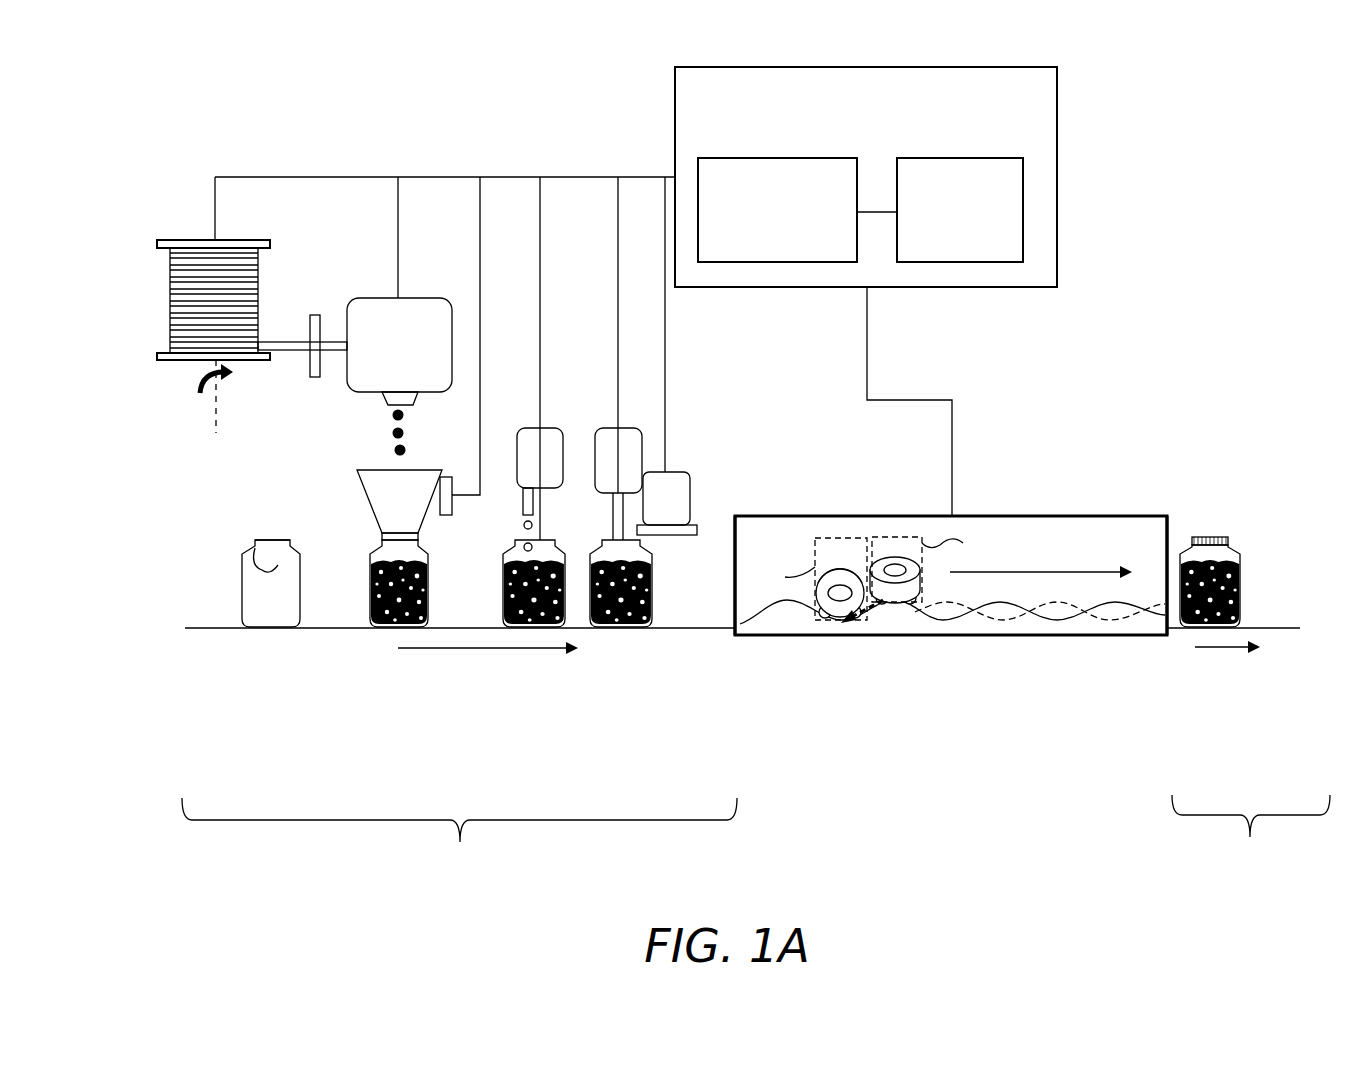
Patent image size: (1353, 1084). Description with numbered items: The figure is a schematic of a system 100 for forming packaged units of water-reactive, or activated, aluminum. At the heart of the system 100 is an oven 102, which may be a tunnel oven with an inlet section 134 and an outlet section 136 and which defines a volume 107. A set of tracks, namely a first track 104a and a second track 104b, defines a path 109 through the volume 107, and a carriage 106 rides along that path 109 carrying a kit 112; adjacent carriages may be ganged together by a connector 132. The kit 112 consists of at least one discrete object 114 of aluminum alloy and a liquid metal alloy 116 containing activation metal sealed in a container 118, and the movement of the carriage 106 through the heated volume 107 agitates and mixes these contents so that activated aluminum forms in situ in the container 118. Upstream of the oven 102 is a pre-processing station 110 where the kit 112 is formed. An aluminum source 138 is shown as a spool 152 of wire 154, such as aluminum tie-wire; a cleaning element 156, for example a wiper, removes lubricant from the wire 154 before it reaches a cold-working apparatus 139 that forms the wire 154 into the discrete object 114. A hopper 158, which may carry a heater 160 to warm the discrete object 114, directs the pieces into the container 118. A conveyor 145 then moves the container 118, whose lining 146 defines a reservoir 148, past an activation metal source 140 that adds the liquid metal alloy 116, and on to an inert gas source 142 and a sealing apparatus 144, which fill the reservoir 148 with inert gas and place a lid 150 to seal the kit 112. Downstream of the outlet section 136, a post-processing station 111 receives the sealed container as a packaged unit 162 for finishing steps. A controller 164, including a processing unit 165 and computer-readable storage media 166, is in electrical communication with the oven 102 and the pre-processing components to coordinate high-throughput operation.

The system 100 is at (516, 76).
The oven 102 is at (985, 601).
The first track 104a is at (1053, 603).
The second track 104b is at (997, 602).
The carriage 106 is at (844, 626).
The volume 107 is at (768, 545).
The path 109 is at (1032, 572).
The pre-processing station 110 is at (459, 841).
The post-processing station 111 is at (1251, 842).
The kit 112 is at (874, 572).
The discrete object 114 is at (393, 431).
The liquid metal alloy 116 is at (524, 525).
The container 118 is at (231, 553).
The connector 132 is at (876, 616).
The inlet section 134 is at (740, 515).
The outlet section 136 is at (1153, 513).
The aluminum source 138 is at (143, 148).
The cold-working apparatus 139 is at (413, 297).
The activation metal source 140 is at (527, 427).
The inert gas source 142 is at (608, 427).
The sealing apparatus 144 is at (682, 472).
The conveyor 145 is at (200, 632).
The lining 146 is at (298, 589).
The reservoir 148 is at (253, 546).
The lid 150 is at (1212, 535).
The spool 152 is at (193, 238).
The wire 154 is at (293, 358).
The cleaning element 156 is at (312, 313).
The hopper 158 is at (366, 494).
The heater 160 is at (445, 518).
The packaged unit 162 is at (1250, 495).
The controller 164 is at (866, 177).
The processing unit 165 is at (777, 210).
The computer-readable storage media 166 is at (960, 210).